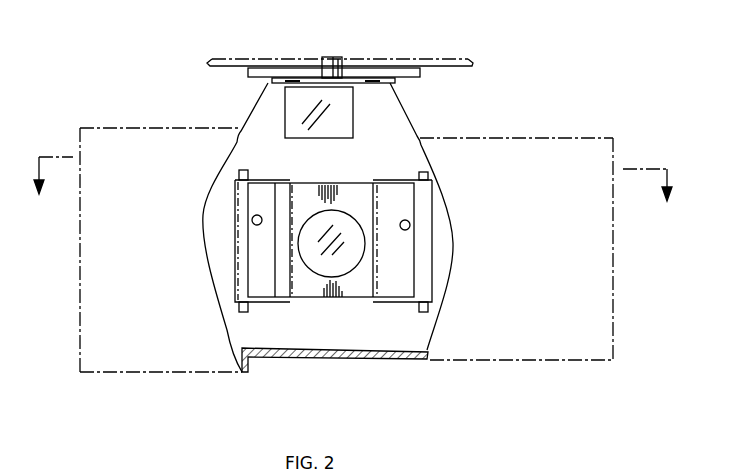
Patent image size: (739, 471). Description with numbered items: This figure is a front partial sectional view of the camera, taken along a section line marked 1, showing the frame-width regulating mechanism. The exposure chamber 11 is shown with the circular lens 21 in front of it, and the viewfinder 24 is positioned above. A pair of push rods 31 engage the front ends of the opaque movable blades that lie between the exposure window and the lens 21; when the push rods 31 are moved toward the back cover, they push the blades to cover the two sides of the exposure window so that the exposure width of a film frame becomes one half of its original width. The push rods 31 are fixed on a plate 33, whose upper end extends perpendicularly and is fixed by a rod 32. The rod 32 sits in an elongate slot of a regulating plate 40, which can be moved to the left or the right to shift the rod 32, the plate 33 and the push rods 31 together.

The section line 1- 1 is at (352, 191).
The exposure chamber 11 is at (358, 287).
The lens 21 is at (323, 262).
The viewfinder 24 is at (343, 120).
The push rods 31 is at (258, 225).
The rod 32 is at (343, 58).
The plate 33 is at (410, 128).
The regulating plate 40 is at (453, 62).